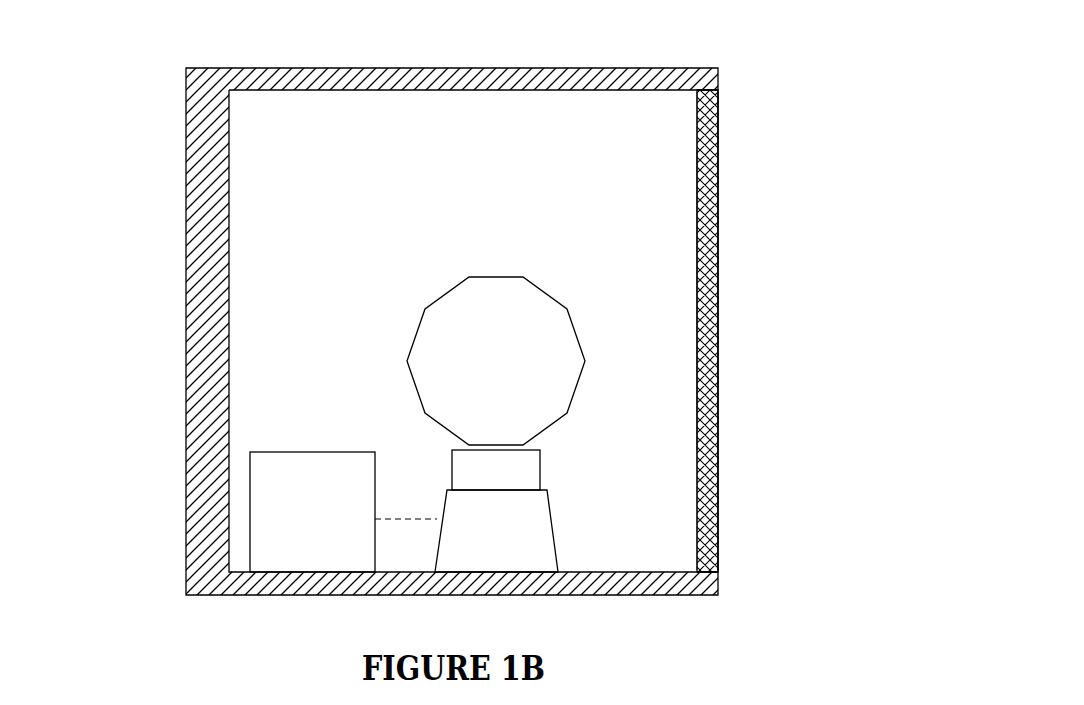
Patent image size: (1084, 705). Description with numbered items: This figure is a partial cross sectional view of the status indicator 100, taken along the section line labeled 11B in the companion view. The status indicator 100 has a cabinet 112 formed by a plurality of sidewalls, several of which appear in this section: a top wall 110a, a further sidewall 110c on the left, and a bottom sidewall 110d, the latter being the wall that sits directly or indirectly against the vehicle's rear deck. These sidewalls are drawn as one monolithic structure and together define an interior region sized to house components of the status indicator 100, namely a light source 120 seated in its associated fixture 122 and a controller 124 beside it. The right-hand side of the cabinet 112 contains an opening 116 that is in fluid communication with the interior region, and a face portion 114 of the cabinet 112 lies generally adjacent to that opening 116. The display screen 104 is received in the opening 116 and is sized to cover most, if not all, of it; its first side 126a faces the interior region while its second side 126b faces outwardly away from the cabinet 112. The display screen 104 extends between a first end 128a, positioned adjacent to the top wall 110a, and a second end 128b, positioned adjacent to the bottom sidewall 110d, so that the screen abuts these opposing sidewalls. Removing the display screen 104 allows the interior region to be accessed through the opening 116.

The status indicator 100 is at (693, 29).
The display screen 104 is at (718, 290).
The top wall 110a is at (510, 68).
The sidewall 110c is at (186, 318).
The bottom sidewall 110d is at (545, 595).
The cabinet 112 is at (186, 122).
The face portion 114 is at (718, 78).
The opening 116 is at (680, 238).
The interior chamber 11B is at (430, 188).
The light source 120 is at (523, 303).
The fixture 122 is at (535, 527).
The controller 124 is at (295, 478).
The first side 126a is at (695, 378).
The second side 126b is at (718, 365).
The first end 128a is at (718, 92).
The second end 128b is at (718, 572).